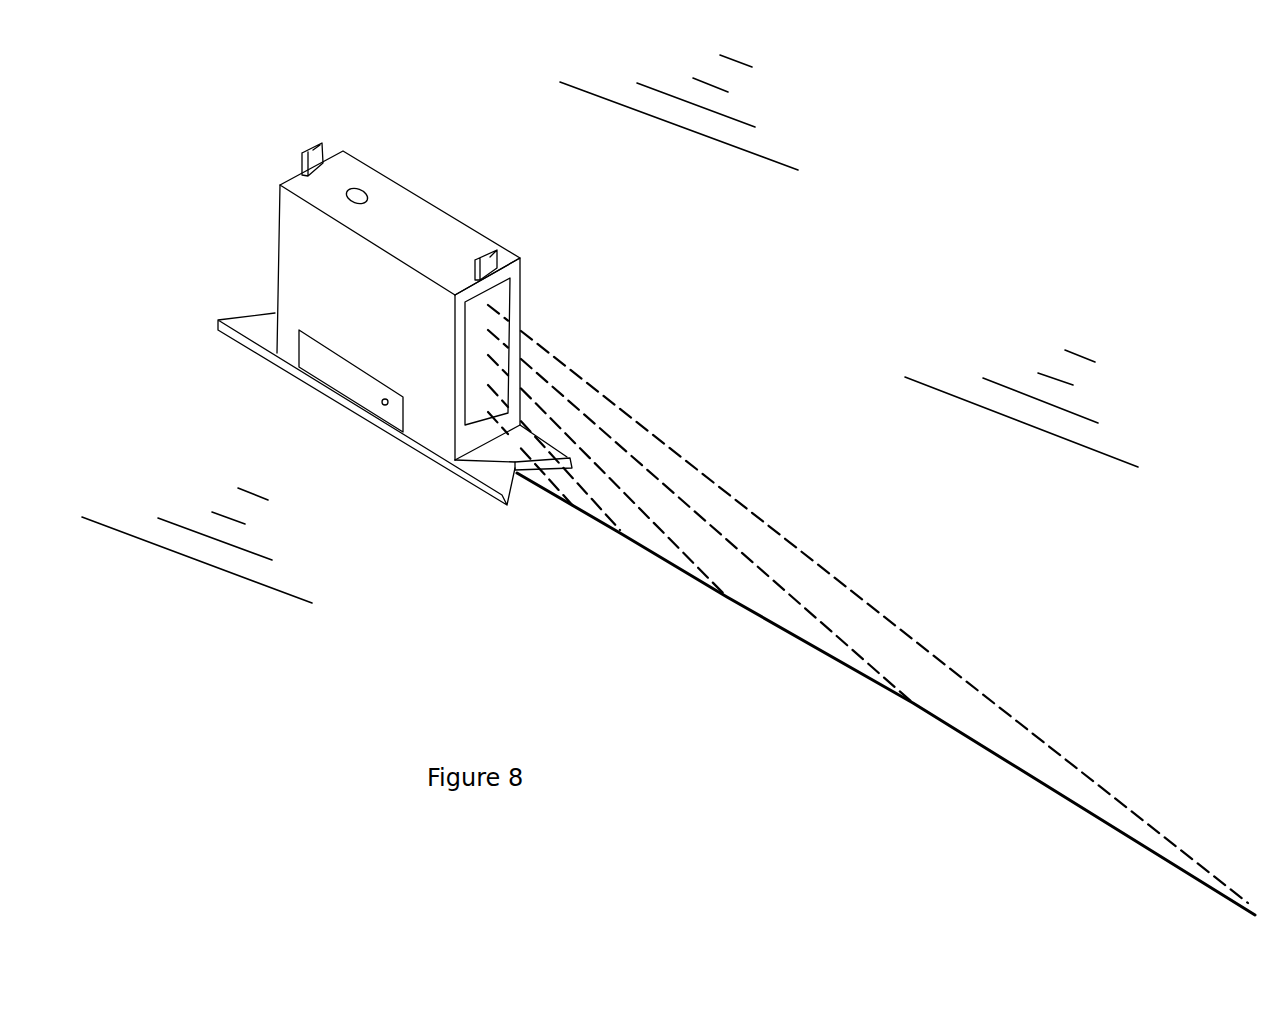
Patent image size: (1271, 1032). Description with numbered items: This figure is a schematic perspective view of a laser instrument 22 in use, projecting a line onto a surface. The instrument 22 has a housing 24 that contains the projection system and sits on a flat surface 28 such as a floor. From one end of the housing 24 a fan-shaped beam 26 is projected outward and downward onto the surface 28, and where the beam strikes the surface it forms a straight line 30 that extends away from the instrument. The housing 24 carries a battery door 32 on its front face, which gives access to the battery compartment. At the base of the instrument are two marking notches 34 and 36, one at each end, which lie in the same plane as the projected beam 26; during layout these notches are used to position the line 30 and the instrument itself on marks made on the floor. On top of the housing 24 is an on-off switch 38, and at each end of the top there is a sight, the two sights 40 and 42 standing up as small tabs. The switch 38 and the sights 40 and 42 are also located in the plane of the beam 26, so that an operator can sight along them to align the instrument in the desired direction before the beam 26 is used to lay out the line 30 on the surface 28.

The instrument 22 is at (195, 117).
The housing 24 is at (442, 207).
The fan-shaped beam 26 is at (643, 457).
The surface 28 is at (197, 513).
The line 30 is at (937, 718).
The battery door 32 is at (385, 402).
The marking notch 34 is at (520, 475).
The marking notch 36 is at (272, 313).
The on-off switch 38 is at (363, 192).
The sight 40 is at (488, 258).
The sight 42 is at (310, 152).